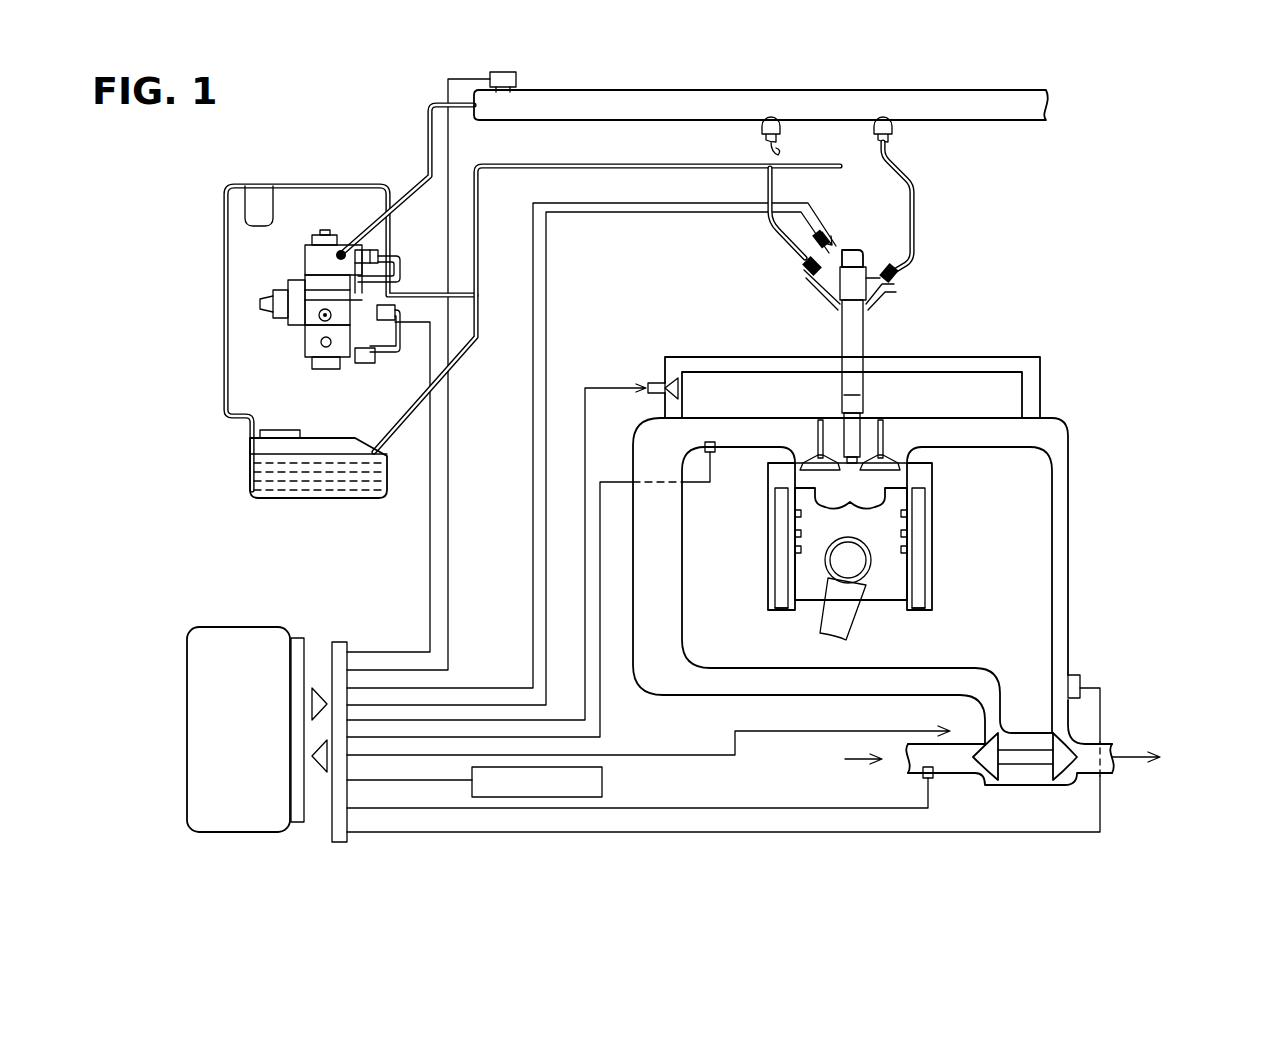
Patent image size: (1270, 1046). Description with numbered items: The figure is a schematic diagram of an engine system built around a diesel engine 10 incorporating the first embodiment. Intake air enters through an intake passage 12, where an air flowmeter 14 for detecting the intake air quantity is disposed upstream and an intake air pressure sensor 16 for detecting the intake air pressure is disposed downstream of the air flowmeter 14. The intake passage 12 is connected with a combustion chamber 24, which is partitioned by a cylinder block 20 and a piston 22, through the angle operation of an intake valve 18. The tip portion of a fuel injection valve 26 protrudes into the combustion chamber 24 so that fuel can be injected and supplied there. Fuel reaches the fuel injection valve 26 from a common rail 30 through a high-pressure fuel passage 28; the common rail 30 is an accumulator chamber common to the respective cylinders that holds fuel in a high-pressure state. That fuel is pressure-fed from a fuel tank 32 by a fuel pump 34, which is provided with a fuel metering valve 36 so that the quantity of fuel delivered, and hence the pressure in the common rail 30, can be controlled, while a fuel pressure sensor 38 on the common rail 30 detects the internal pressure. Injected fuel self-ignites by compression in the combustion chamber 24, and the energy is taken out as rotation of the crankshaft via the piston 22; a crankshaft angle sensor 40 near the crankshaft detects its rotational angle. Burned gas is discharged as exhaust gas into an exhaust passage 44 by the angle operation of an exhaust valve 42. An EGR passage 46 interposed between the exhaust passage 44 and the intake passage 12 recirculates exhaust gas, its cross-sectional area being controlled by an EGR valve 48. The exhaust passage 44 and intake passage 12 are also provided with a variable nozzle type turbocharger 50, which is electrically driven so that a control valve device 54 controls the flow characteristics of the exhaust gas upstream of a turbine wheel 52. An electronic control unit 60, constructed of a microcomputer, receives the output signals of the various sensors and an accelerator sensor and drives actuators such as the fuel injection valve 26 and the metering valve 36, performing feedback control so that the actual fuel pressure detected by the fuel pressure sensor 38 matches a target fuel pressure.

The diesel engine 10 is at (1000, 267).
The intake passage 12 is at (747, 452).
The air flowmeter 14 is at (922, 781).
The intake air pressure sensor 16 is at (715, 455).
The intake valve 18 is at (820, 420).
The cylinder block 20 is at (932, 590).
The piston 22 is at (905, 564).
The combustion chamber 24 is at (905, 479).
The fuel injection valve 26 is at (866, 342).
The high-pressure fuel passage 28 is at (913, 186).
The common rail 30 is at (921, 90).
The fuel tank 32 is at (342, 438).
The fuel pump 34 is at (328, 240).
The fuel metering valve 36 is at (395, 316).
The fuel pressure sensor 38 is at (516, 80).
The crankshaft angle sensor 40 is at (603, 781).
The exhaust valve 42 is at (880, 420).
The exhaust passage 44 is at (1068, 482).
The EGR passage 46 is at (1040, 390).
The EGR valve 48 is at (655, 382).
The variable nozzle type turbocharger 50 is at (1040, 787).
The turbine wheel 52 is at (1046, 733).
The control valve device 54 is at (1080, 670).
The electronic control unit 60 is at (212, 627).